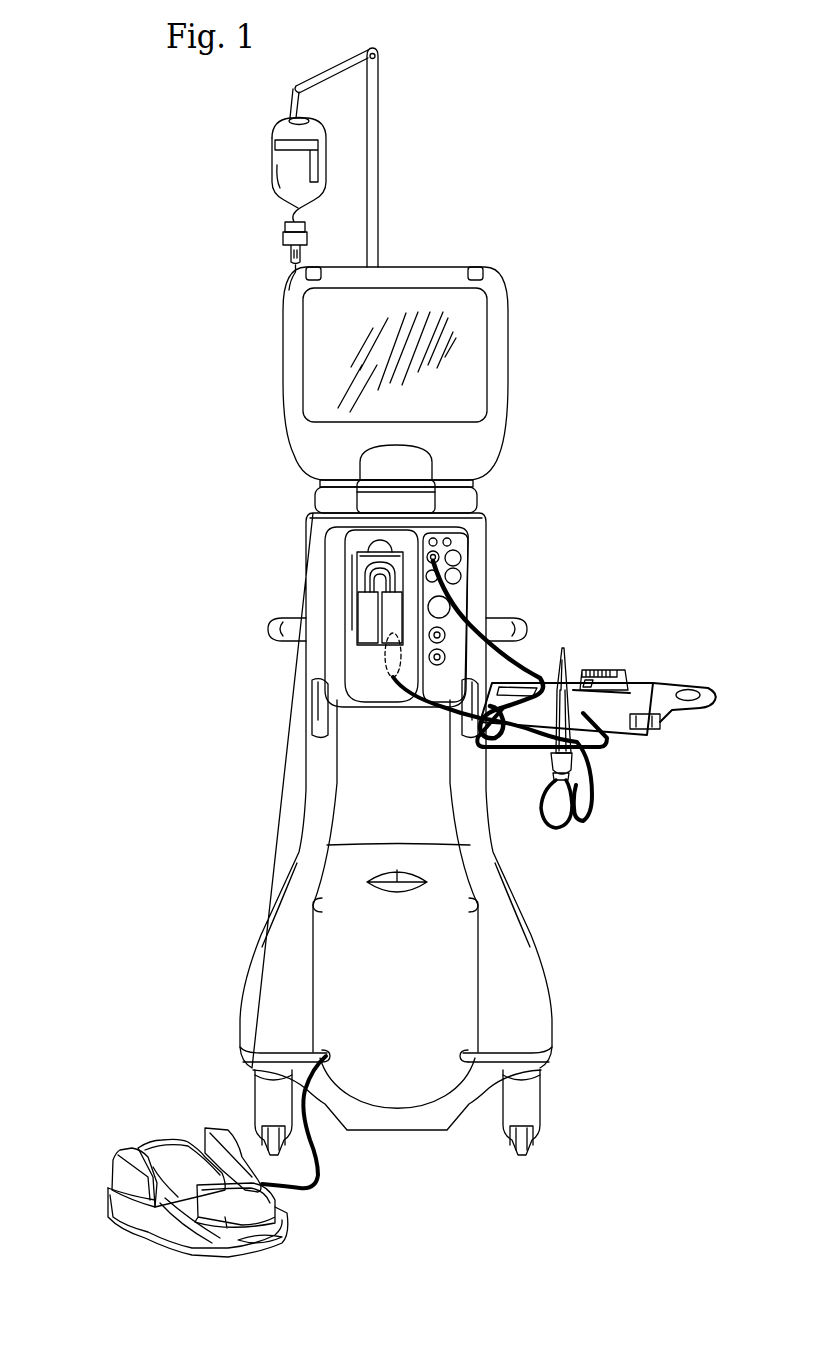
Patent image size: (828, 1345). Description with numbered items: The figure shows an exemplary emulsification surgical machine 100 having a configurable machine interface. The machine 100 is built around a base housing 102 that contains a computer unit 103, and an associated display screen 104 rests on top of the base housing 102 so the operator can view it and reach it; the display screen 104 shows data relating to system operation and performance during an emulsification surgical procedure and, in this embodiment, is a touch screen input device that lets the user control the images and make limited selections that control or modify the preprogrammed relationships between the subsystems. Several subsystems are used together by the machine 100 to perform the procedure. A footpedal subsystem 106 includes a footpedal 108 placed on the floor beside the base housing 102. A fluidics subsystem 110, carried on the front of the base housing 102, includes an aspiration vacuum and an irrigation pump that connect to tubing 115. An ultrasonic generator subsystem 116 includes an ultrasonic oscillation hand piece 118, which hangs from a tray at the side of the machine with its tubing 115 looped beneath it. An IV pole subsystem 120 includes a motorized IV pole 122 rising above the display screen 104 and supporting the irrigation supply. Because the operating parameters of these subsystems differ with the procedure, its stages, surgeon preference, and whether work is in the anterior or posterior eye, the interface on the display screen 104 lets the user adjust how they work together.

The emulsification surgical machine 100 is at (541, 118).
The base housing 102 is at (294, 814).
The computer unit 103 is at (316, 492).
The display screen 104 is at (283, 351).
The footpedal subsystem 106 is at (152, 1120).
The footpedal 108 is at (118, 1166).
The fluidics subsystem 110 is at (291, 603).
The tubing 115 is at (579, 834).
The ultrasonic generator subsystem 116 is at (477, 573).
The ultrasonic oscillation hand piece 118 is at (562, 645).
The IV pole subsystem 120 is at (395, 193).
The motorized IV pole 122 is at (379, 137).